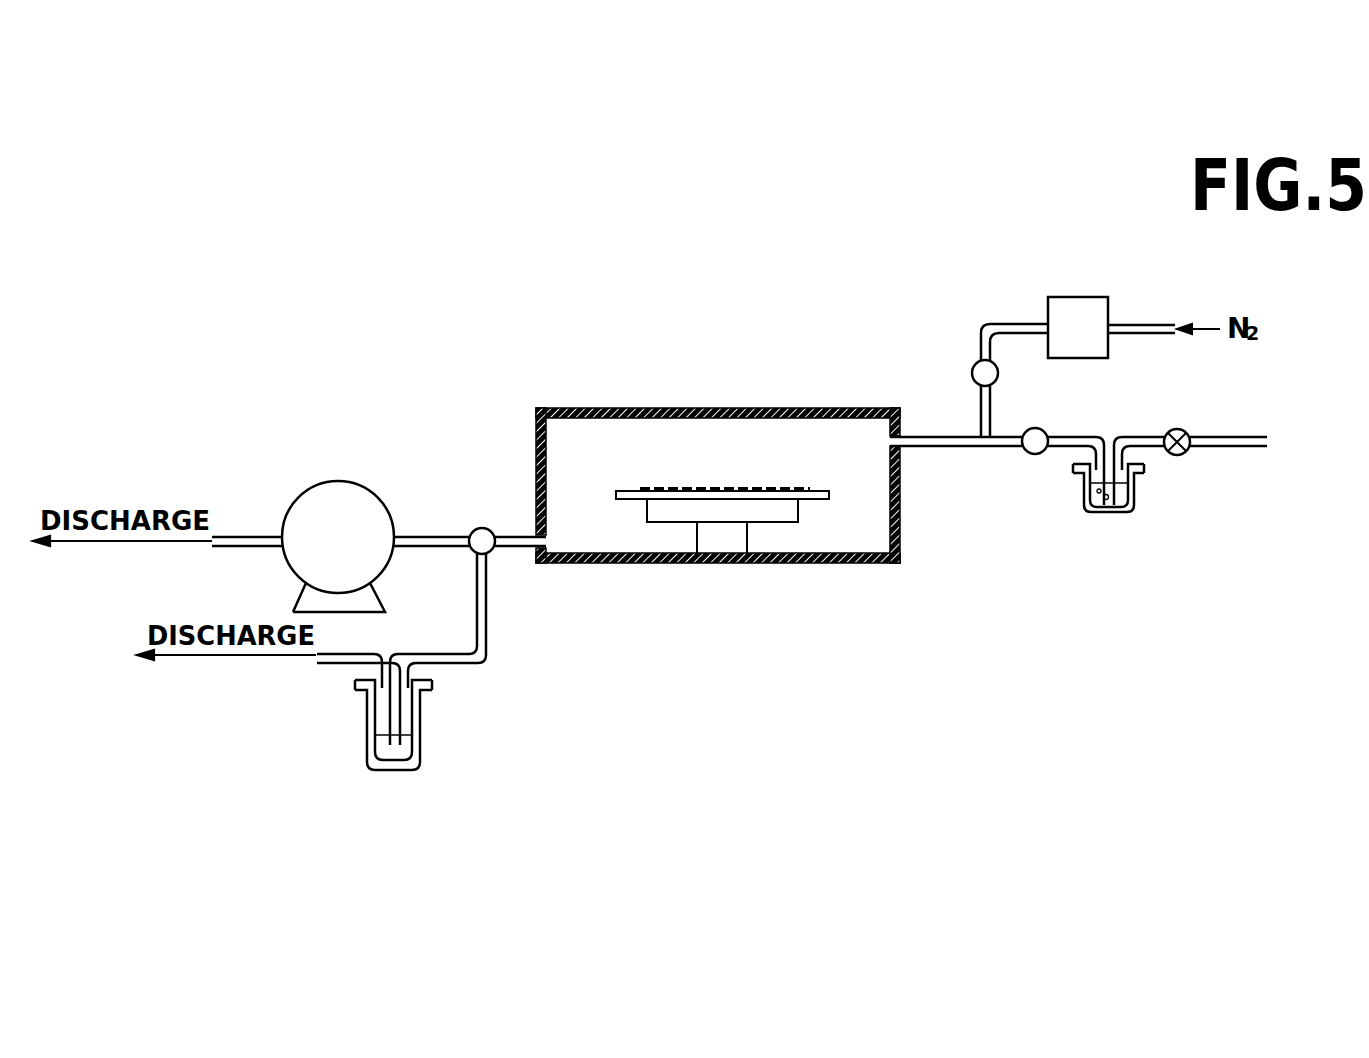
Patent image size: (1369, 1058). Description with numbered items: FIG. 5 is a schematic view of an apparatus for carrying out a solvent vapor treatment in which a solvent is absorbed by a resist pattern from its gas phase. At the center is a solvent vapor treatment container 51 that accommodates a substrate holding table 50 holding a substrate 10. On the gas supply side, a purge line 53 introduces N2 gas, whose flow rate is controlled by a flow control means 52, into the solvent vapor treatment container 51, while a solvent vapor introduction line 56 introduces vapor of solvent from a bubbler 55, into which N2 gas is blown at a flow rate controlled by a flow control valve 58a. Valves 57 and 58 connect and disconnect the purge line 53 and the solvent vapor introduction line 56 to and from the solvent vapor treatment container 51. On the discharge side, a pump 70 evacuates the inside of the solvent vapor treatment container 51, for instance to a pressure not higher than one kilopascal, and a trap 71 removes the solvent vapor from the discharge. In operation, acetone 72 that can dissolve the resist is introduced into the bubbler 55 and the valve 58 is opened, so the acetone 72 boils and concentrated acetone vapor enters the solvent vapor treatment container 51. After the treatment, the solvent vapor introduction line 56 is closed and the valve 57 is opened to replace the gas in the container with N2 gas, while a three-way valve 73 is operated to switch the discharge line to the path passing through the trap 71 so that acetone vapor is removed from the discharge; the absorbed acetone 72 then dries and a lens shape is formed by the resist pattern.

The substrate 10 is at (628, 492).
The substrate holding table 50 is at (795, 505).
The solvent vapor treatment container 51 is at (782, 408).
The flow control means 52 is at (1078, 305).
The purge line 53 is at (980, 347).
The bubbler 55 is at (1112, 514).
The solvent vapor introduction line 56 is at (1007, 449).
The valve 57 is at (972, 373).
The valve 58 is at (1033, 430).
The flow control valve 58a is at (1173, 431).
The pump 70 is at (337, 487).
The trap 71 is at (403, 753).
The acetone 72 is at (1125, 496).
The three-way valve 73 is at (481, 528).